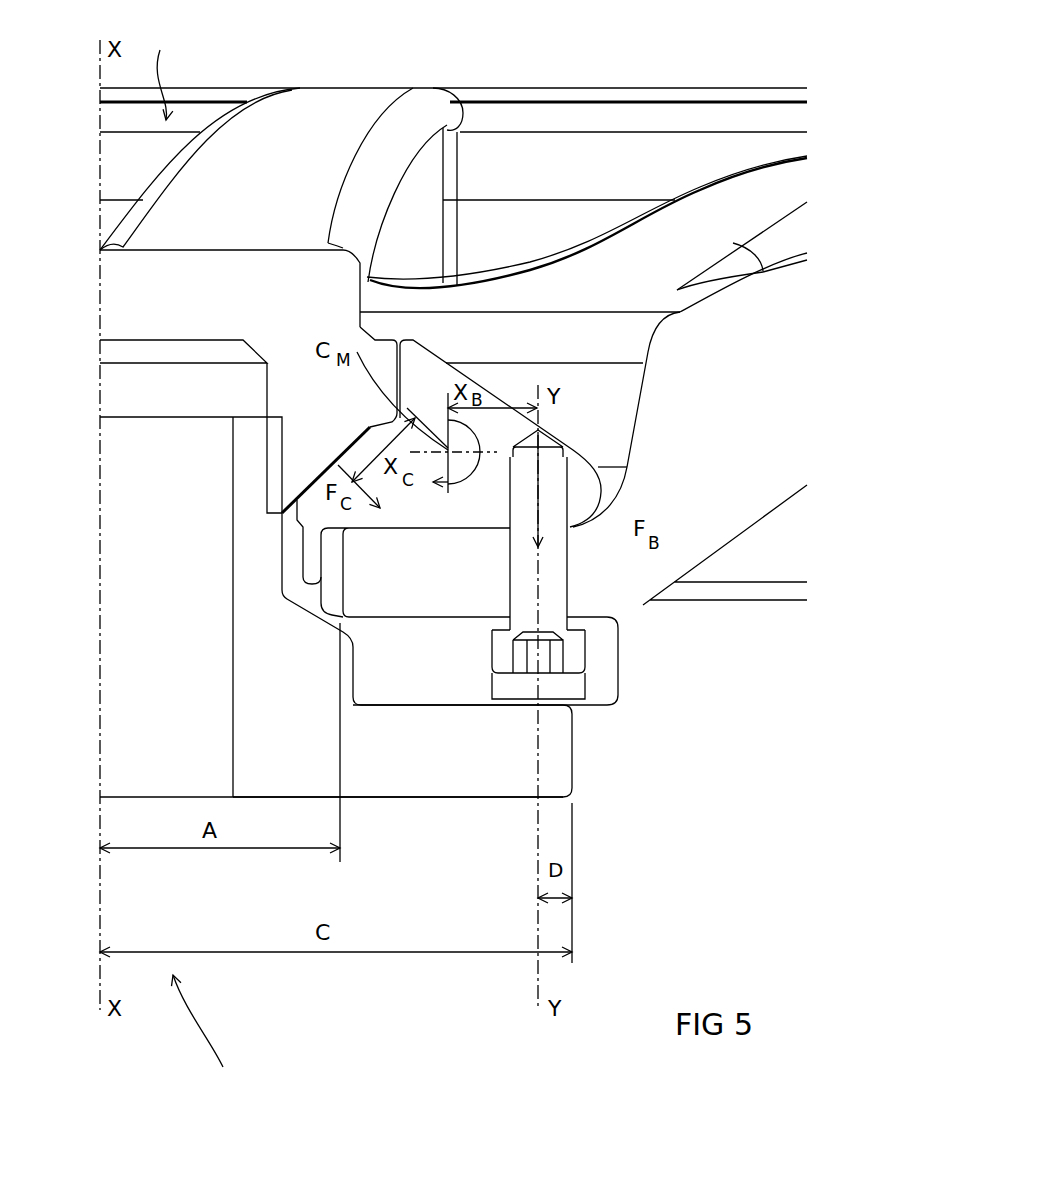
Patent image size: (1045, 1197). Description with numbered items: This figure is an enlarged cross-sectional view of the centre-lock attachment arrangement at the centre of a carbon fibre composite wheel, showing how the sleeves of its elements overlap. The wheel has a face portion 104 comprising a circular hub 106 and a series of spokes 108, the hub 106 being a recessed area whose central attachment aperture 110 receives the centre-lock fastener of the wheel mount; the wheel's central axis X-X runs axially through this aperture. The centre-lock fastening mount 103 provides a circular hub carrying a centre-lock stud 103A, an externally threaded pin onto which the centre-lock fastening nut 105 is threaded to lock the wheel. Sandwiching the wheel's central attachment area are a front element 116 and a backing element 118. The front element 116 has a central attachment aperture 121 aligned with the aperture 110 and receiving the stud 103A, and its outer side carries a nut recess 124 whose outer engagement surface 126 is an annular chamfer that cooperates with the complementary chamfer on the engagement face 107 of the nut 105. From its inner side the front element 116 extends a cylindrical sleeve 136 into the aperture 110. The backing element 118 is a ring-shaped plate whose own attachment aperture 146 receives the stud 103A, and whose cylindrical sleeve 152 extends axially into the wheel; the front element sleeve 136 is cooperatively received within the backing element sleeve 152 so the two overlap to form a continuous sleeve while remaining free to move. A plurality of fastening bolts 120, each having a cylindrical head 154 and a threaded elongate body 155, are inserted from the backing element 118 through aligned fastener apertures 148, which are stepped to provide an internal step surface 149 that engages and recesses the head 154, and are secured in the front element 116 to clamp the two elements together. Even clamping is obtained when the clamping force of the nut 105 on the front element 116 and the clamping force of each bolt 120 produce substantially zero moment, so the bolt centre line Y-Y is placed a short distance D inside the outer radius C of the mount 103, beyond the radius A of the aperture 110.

The centre-lock fastening mount 103 is at (553, 767).
The centre-lock stud 103A is at (255, 480).
The face portion 104 is at (530, 150).
The centre-lock fastening nut 105 is at (200, 309).
The circular hub 106 is at (470, 572).
The engagement face 107 is at (304, 497).
The spokes 108 is at (283, 132).
The central attachment aperture 110 is at (224, 1029).
The front element 116 is at (455, 365).
The backing element 118 is at (462, 762).
The fastening bolts 120 is at (559, 562).
The attachment aperture 121 is at (173, 74).
The nut recess 124 is at (383, 335).
The outer engagement surface 126 is at (316, 471).
The cylindrical sleeve 136 is at (310, 548).
The attachment aperture 146 is at (185, 739).
The fastener apertures 148 is at (577, 705).
The internal step surface 149 is at (583, 622).
The cylindrical sleeve 152 is at (332, 598).
The head 154 is at (573, 650).
The elongate body 155 is at (523, 577).